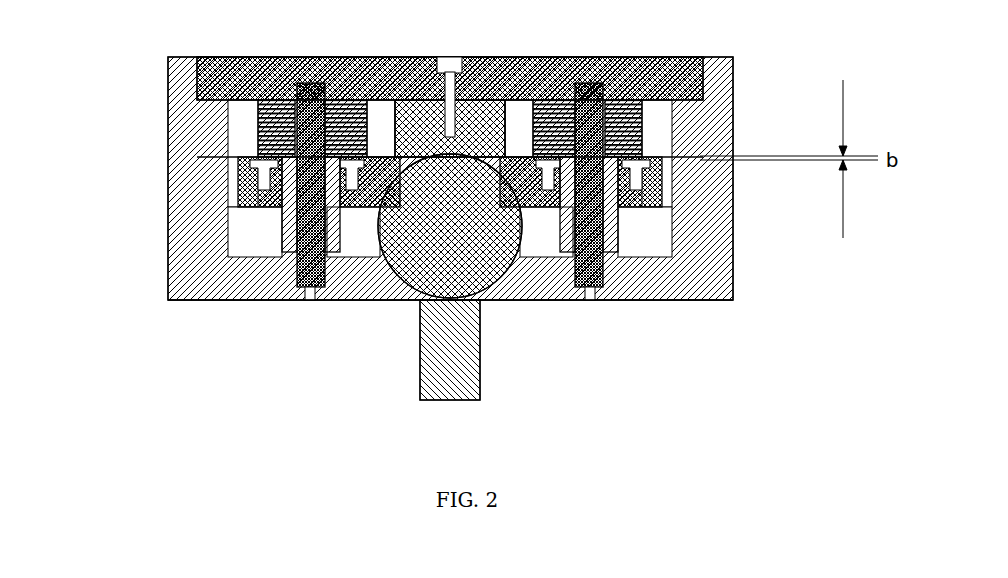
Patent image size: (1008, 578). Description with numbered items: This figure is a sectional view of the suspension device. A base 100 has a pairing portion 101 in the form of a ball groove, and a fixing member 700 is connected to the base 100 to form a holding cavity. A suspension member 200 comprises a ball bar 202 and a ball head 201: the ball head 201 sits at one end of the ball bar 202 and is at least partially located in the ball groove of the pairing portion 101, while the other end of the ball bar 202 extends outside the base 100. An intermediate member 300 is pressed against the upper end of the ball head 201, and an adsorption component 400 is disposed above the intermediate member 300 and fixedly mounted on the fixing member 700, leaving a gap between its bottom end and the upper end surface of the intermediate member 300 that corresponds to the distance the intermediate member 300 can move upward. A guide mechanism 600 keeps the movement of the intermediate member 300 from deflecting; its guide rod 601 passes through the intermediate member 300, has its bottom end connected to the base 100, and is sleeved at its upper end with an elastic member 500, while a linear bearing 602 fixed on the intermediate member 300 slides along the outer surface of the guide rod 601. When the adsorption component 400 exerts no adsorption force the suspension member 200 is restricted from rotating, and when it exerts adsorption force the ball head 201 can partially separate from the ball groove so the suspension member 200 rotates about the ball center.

The base 100 is at (660, 283).
The pairing portion 101 is at (390, 272).
The suspension member 200 is at (516, 294).
The ball head 201 is at (470, 290).
The ball bar 202 is at (447, 378).
The intermediate member 300 is at (620, 186).
The adsorption component 400 is at (420, 122).
The elastic member 500 is at (260, 118).
The guide mechanism 600 is at (460, 197).
The guide rod 601 is at (300, 256).
The linear bearing 602 is at (287, 222).
The fixing member 700 is at (650, 65).